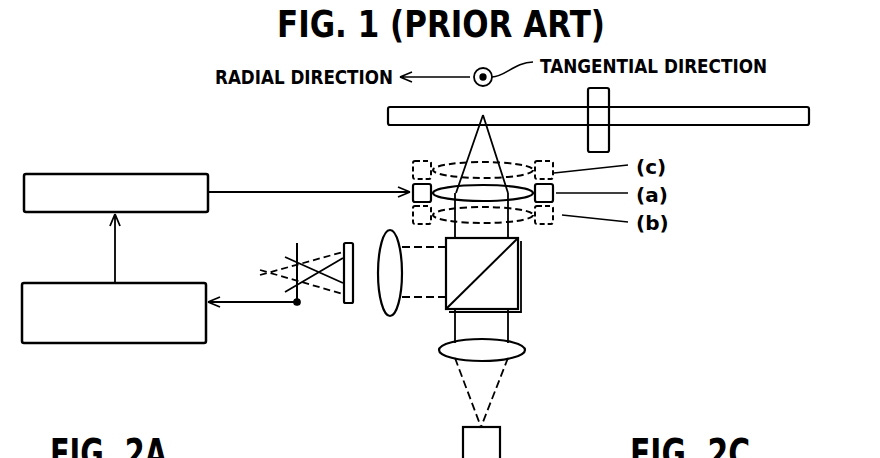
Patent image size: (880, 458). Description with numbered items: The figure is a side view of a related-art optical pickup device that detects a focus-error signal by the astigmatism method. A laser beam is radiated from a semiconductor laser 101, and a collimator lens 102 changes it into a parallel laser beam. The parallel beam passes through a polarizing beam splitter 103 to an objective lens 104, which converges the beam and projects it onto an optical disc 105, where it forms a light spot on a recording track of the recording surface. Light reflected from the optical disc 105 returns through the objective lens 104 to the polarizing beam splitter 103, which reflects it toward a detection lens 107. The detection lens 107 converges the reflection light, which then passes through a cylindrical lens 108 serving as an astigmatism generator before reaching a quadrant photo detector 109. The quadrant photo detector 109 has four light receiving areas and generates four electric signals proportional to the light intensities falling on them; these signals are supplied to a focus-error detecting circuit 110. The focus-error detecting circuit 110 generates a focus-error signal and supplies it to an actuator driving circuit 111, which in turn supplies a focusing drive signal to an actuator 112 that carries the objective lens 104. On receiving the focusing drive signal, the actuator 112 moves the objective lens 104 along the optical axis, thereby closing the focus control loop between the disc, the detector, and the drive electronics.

The semiconductor laser 101 is at (500, 440).
The collimator lens 102 is at (525, 350).
The polarizing beam splitter 103 is at (521, 285).
The objective lens 104 is at (522, 208).
The optical disc 105 is at (750, 126).
The detection lens 107 is at (391, 318).
The cylindrical lens 108 is at (348, 305).
The quadrant photo detector 109 is at (295, 306).
The focus-error detecting circuit 110 is at (135, 345).
The actuator driving circuit 111 is at (131, 174).
The actuator 112 is at (412, 184).